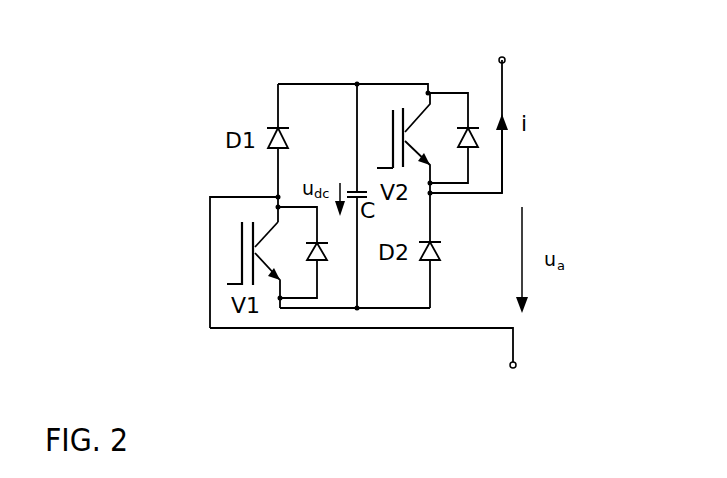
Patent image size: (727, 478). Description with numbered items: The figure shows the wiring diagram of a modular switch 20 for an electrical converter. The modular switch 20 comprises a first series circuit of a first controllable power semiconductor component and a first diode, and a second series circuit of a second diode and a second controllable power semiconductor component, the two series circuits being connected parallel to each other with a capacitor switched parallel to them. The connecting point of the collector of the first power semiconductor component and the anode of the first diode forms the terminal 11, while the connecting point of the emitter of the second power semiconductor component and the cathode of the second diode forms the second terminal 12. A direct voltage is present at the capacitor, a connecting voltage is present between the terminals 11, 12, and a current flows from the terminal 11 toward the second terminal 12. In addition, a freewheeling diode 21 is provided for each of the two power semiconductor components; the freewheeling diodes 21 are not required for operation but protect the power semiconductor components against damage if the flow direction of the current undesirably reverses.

The modular switch 20 is at (130, 122).
The second terminal 12 is at (504, 62).
The terminal 11 is at (516, 364).
The freewheeling diode 21 is at (480, 138).